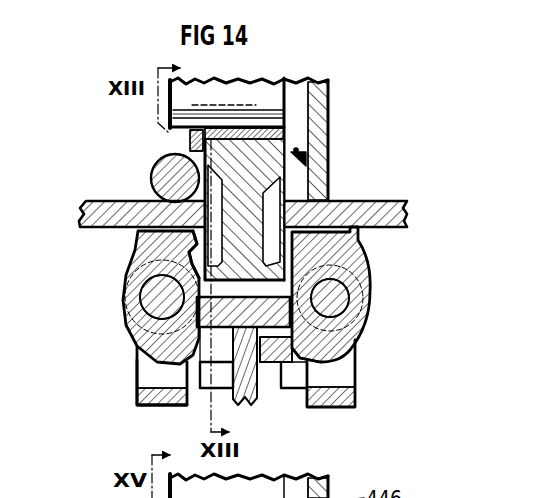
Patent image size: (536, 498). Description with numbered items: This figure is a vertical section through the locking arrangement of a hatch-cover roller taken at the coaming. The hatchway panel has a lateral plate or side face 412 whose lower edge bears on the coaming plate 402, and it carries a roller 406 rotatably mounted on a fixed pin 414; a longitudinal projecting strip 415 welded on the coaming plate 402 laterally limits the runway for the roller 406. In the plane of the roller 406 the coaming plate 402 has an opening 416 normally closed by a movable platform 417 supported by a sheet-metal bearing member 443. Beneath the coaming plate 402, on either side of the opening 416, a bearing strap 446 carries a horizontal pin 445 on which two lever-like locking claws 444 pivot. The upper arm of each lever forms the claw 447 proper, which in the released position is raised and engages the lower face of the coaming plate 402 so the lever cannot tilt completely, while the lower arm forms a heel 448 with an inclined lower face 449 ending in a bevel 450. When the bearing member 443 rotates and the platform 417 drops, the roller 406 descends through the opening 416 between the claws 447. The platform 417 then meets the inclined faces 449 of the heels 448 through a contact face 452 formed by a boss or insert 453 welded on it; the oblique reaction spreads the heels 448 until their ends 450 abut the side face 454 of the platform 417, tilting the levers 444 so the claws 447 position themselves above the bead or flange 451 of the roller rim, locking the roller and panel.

The coaming plate 402 is at (92, 208).
The roller 406 is at (215, 214).
The side face of the hatchway panel 412 is at (313, 118).
The fixed pin 414 is at (210, 98).
The longitudinal projecting strip 415 is at (163, 173).
The opening 416 is at (192, 247).
The movable platform 417 is at (312, 342).
The bearing member 443 is at (330, 407).
The movable locking claw lever 444 is at (133, 362).
The horizontal pin 445 is at (140, 367).
The bearing strap 446 is at (180, 406).
The claw 447 is at (150, 265).
The heel 448 is at (157, 404).
The inclined lower face 449 is at (233, 397).
The bevel 450 is at (258, 390).
The bead or flange of the roller rim 451 is at (288, 204).
The contact face 452 is at (282, 372).
The boss or insert 453 is at (292, 360).
The side face of the platform 454 is at (363, 291).